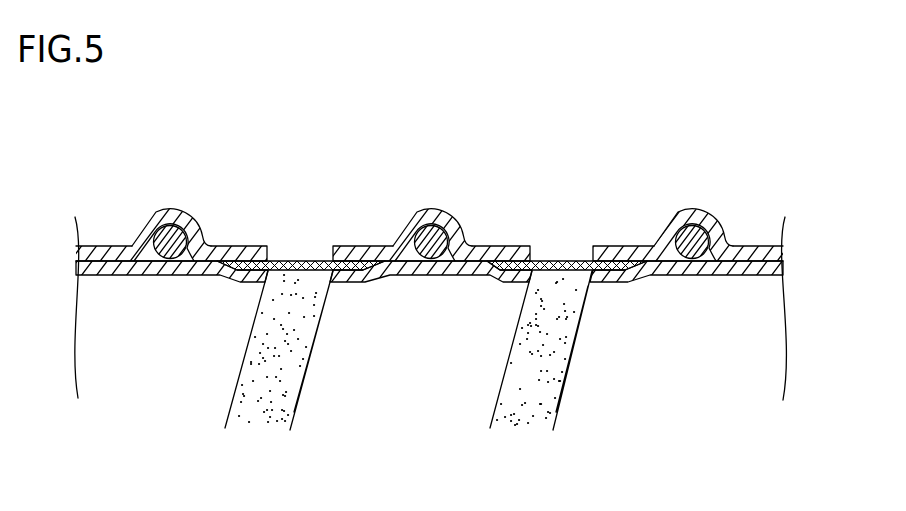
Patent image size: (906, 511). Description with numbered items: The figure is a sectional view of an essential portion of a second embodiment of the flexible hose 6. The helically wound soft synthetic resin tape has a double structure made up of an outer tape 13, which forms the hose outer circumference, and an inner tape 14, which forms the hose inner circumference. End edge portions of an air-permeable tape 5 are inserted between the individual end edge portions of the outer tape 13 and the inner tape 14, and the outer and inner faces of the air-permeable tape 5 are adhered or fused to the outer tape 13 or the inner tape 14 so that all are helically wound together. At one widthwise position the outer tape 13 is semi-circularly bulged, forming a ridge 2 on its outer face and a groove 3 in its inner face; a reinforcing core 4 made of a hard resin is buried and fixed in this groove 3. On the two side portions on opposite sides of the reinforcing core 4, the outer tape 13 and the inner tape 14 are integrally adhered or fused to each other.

The ridge 2 is at (433, 213).
The groove 3 is at (436, 258).
The reinforcing core 4 is at (168, 238).
The air-permeable tape 5 is at (302, 287).
The flexible hose 6 is at (562, 149).
The outer tape 13 is at (372, 253).
The inner tape 14 is at (391, 270).